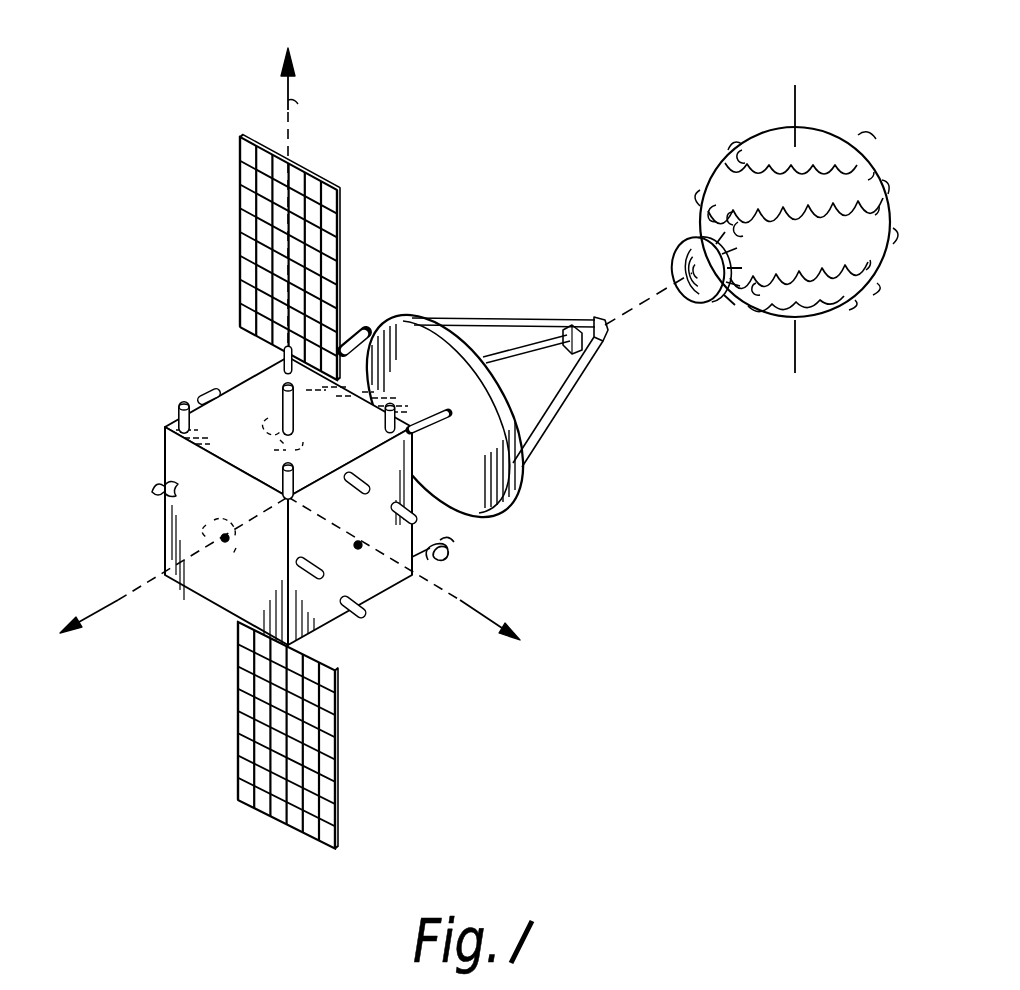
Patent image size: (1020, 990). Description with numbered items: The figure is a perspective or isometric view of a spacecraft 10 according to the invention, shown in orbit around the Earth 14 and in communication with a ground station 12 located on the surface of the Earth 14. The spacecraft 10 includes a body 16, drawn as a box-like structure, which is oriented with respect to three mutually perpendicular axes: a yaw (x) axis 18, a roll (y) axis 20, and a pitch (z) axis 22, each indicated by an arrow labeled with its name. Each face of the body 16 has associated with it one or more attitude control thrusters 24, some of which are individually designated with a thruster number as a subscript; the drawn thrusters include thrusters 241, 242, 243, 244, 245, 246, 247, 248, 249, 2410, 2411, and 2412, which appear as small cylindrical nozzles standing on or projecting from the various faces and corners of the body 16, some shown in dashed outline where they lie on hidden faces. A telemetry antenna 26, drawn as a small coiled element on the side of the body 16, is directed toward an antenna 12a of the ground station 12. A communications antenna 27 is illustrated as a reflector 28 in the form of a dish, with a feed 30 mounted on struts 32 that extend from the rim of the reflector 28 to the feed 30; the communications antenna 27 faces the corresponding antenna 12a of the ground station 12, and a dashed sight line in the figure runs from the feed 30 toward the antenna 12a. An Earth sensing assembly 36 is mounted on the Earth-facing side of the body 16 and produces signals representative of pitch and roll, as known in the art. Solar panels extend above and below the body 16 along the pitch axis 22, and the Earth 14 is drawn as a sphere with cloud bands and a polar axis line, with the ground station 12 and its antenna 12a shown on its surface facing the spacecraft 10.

The spacecraft 10 is at (364, 432).
The ground station 12 is at (850, 322).
The antenna of ground station 12a is at (705, 305).
The Earth 14 is at (755, 137).
The body 16 is at (220, 608).
The yaw axis 18 is at (122, 601).
The roll axis 20 is at (488, 615).
The pitch axis 22 is at (289, 128).
The attitude control thrusters 24 is at (285, 497).
The attitude control thruster 241 is at (176, 423).
The attitude control thruster 242 is at (274, 370).
The attitude control thruster 243 is at (390, 406).
The attitude control thruster 244 is at (270, 490).
The attitude control thruster 245 is at (360, 490).
The attitude control thruster 246 is at (326, 558).
The attitude control thruster 247 is at (358, 611).
The attitude control thruster 248 is at (416, 510).
The attitude control thruster 249 is at (304, 419).
The attitude control thruster 2410 is at (202, 394).
The attitude control thruster 2411 is at (148, 491).
The attitude control thruster 2412 is at (230, 543).
The telemetry antenna 26 is at (443, 562).
The communications antenna 27 is at (513, 381).
The reflector 28 is at (418, 318).
The feed 30 is at (598, 317).
The struts 32 is at (585, 366).
The Earth sensing assembly 36 is at (360, 334).